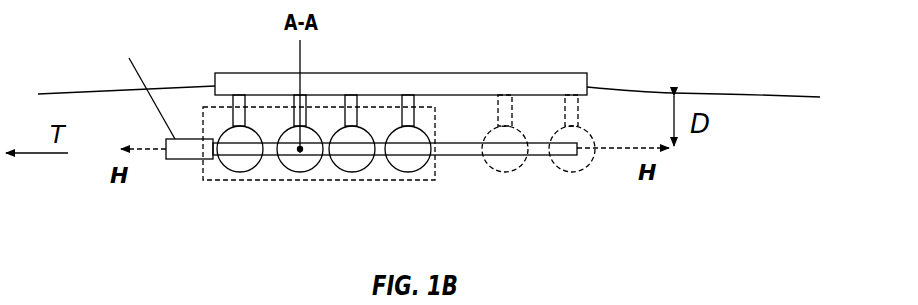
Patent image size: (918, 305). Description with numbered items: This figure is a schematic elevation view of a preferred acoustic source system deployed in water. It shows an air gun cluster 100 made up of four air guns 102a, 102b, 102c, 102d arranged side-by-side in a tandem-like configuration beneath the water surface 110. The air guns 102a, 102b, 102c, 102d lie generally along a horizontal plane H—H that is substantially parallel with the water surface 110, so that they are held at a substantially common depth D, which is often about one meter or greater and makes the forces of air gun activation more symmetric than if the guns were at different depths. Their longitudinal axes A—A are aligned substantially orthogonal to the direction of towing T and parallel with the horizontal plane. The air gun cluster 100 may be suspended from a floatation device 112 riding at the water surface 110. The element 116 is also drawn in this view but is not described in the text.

The air gun cluster 100 is at (401, 189).
The air gun 102a is at (240, 165).
The air gun 102b is at (300, 163).
The air gun 102c is at (352, 163).
The air gun 102d is at (410, 163).
The water surface 110 is at (724, 92).
The floatation device 112 is at (511, 70).
The handle/linkage 116 is at (141, 71).